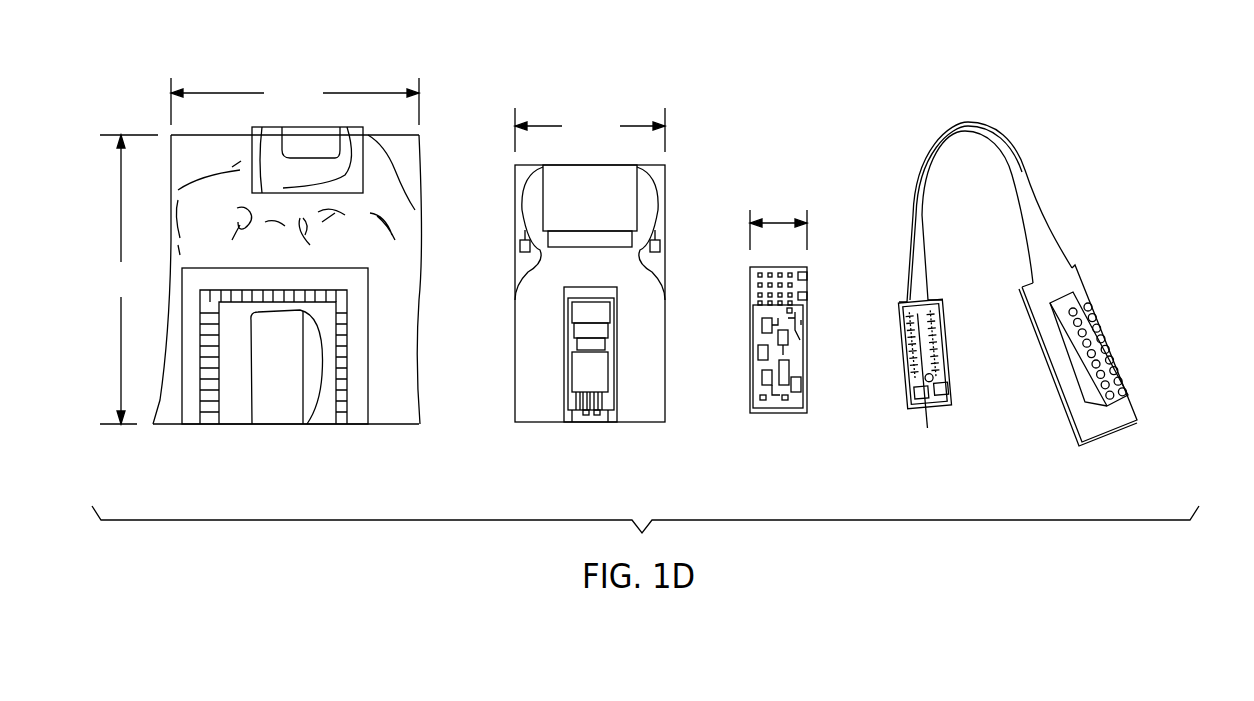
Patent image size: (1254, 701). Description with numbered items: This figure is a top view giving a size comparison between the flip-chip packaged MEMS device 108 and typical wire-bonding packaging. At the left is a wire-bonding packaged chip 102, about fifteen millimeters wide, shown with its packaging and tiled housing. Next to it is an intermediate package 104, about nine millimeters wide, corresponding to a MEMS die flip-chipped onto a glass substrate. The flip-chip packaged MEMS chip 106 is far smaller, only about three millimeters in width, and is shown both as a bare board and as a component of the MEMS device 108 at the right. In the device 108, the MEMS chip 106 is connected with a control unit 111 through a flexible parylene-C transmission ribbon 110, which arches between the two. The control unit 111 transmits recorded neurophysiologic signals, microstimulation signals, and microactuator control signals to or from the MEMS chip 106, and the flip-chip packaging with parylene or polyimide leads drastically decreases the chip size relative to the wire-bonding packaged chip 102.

The wire-bonding packaged chip 102 is at (283, 398).
The camera module housing 104 is at (590, 422).
The flip-chip packaged MEMS chip 106 is at (778, 405).
The MEMS device 108 is at (957, 314).
The flexible parylene-C transmission ribbon 110 is at (1038, 168).
The control unit 111 is at (1105, 317).